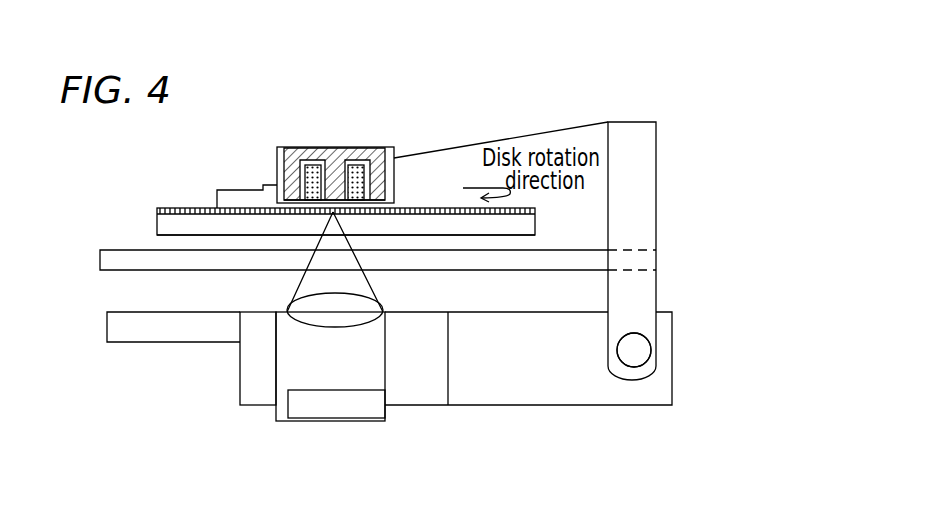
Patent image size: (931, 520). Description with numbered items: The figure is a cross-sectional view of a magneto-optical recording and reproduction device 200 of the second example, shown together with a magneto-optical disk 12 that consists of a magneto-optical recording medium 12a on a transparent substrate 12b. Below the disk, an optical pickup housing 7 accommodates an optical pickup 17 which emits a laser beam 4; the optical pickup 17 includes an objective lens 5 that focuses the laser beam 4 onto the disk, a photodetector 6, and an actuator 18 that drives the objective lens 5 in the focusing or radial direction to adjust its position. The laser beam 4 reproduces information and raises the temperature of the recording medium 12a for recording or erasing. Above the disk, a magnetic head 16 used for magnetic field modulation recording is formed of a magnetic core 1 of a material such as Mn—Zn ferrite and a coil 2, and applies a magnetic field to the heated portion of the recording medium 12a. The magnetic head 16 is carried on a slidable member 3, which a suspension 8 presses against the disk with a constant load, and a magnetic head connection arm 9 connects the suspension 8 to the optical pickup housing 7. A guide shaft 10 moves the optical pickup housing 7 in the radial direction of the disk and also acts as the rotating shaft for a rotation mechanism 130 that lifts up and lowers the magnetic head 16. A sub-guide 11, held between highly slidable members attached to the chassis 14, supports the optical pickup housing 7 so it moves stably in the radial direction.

The magnetic core 1 is at (335, 148).
The coil 2 is at (294, 147).
The slidable member 3 is at (217, 198).
The laser beam 4 is at (311, 283).
The objective lens 5 is at (358, 302).
The photodetector 6 is at (360, 413).
The optical pickup housing 7 is at (250, 384).
The suspension 8 is at (442, 150).
The magnetic head connection arm 9 is at (657, 240).
The guide shaft 10 is at (640, 352).
The rotation mechanism 130 is at (634, 350).
The sub-guide 11 is at (116, 330).
The magneto-optical disk 12 is at (70, 183).
The magneto-optical recording medium 12a is at (166, 211).
The transparent substrate 12b is at (166, 225).
The chassis 14 is at (108, 258).
The magnetic head 16 is at (253, 83).
The optical pickup 17 is at (284, 376).
The actuator 18 is at (431, 377).
The magneto-optical recording and reproduction device 200 is at (458, 45).